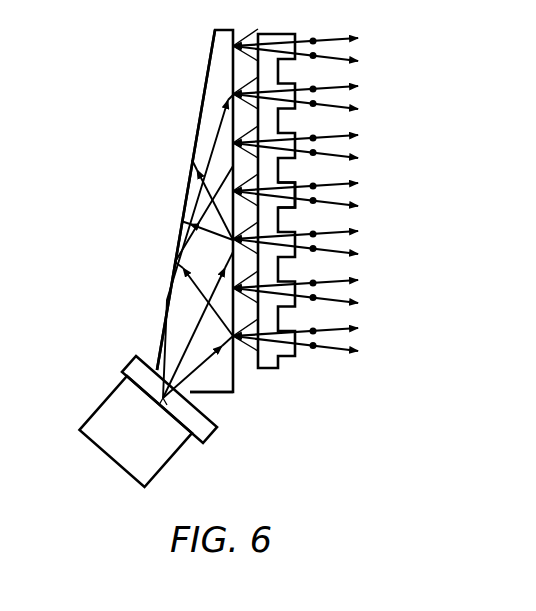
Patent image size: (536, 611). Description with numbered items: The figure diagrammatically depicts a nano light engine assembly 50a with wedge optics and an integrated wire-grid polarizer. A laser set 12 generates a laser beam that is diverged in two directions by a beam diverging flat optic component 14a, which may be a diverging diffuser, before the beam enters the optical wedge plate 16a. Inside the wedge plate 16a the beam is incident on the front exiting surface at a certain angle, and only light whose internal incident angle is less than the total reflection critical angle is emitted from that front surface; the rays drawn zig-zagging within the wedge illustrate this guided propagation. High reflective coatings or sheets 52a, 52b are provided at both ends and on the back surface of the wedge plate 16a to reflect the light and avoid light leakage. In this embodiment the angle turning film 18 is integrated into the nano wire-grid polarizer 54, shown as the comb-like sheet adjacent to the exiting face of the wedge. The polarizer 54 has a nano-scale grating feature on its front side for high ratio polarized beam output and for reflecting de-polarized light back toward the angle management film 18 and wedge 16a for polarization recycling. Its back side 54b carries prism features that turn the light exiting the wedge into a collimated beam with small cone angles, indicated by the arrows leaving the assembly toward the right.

The laser set 12 is at (100, 406).
The beam diverging flat optic component 14a is at (134, 358).
The optical wedge plate 16a is at (212, 97).
The angle turning film 18 is at (232, 67).
The assembly 50a is at (329, 18).
The high reflective coating/sheet 52a is at (188, 195).
The high reflective coating/sheet 52b is at (213, 392).
The nano wire-grid polarizer 54 is at (273, 362).
The back side of the integrated nano wire-grid polarizer 54b is at (297, 207).